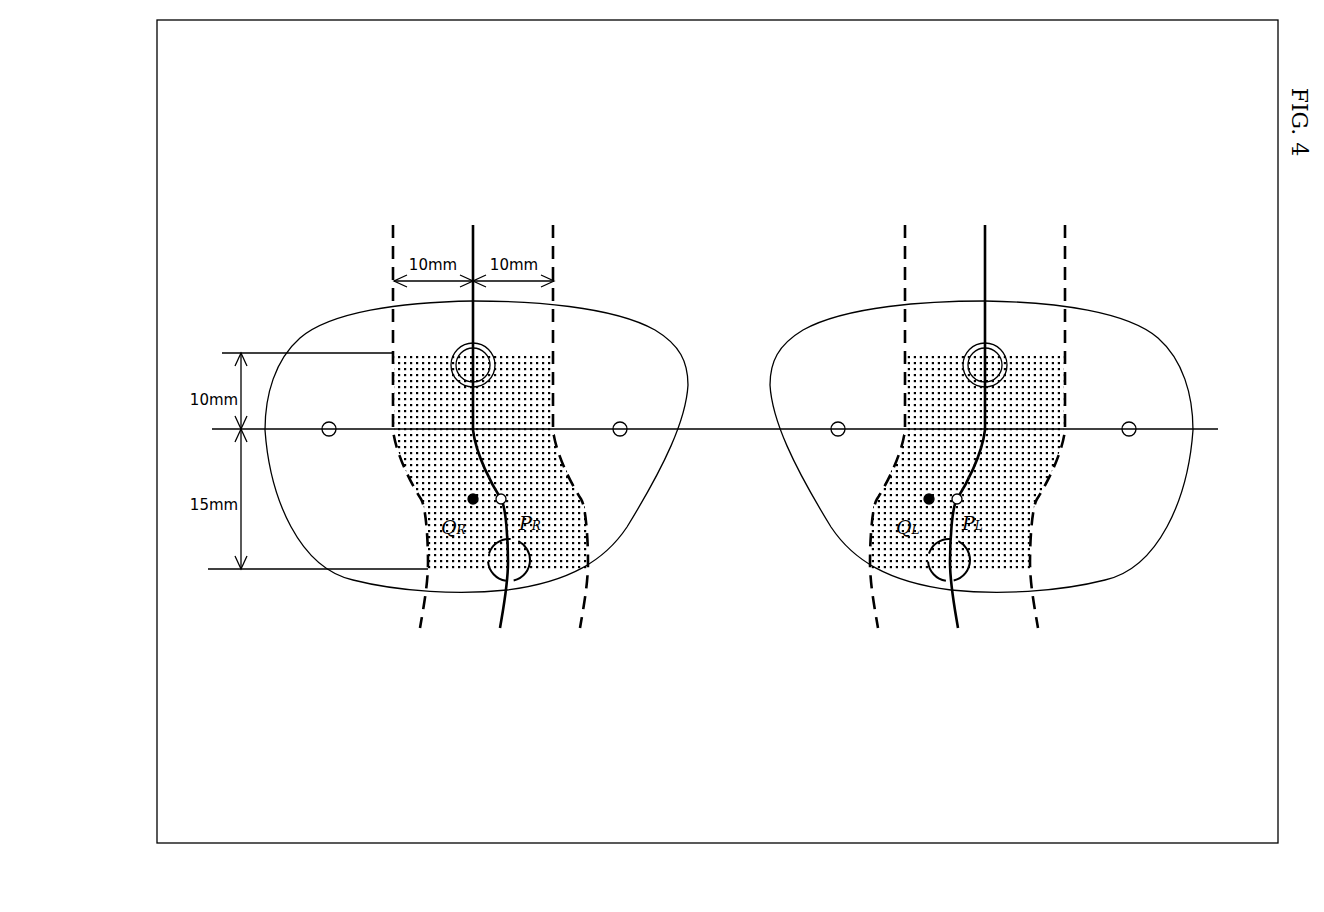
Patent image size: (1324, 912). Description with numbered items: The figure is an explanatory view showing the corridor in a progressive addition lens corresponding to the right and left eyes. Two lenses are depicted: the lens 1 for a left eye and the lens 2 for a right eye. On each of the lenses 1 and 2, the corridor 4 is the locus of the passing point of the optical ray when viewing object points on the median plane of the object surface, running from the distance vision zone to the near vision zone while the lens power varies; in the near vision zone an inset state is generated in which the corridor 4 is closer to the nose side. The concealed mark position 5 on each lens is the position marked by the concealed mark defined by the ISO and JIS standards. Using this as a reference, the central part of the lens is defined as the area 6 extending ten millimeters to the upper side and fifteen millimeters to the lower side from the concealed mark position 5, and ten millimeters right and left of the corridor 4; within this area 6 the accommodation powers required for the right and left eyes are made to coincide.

The lens for a left eye 1 is at (1090, 586).
The lens for a right eye 2 is at (368, 588).
The corridor 4 is at (471, 240).
The concealed mark position 5 is at (329, 436).
The area 6 is at (457, 568).